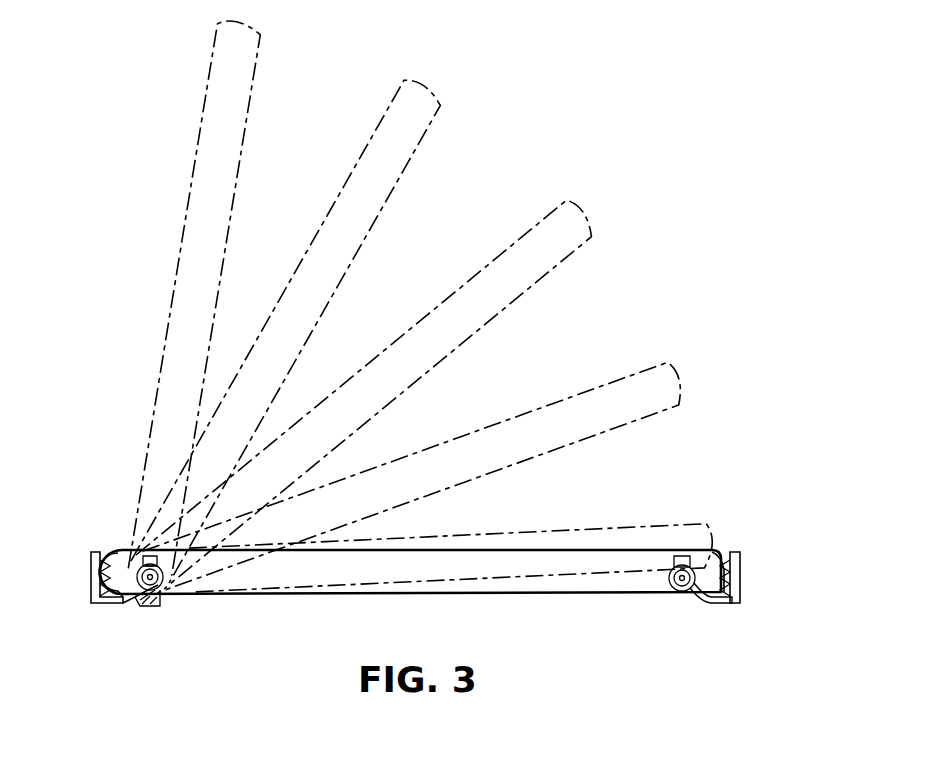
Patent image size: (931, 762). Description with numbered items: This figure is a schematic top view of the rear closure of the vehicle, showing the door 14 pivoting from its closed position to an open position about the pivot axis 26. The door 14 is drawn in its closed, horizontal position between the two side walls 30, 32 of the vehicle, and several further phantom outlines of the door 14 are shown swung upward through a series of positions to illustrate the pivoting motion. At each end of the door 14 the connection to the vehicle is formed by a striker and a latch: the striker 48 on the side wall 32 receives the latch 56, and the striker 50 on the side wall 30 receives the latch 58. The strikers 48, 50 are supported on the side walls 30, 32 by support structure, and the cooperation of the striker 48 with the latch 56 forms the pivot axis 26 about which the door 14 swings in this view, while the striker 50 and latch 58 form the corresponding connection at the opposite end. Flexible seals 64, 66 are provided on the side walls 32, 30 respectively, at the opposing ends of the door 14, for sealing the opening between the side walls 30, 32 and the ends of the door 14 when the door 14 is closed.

The door 14 is at (165, 312).
The pivot axis 26 is at (115, 590).
The side wall 30 is at (740, 563).
The side wall 32 is at (91, 563).
The striker 48 is at (148, 608).
The striker 50 is at (677, 590).
The latch 56 is at (167, 592).
The latch 58 is at (668, 590).
The flexible seal 64 is at (103, 553).
The flexible seal 66 is at (727, 553).